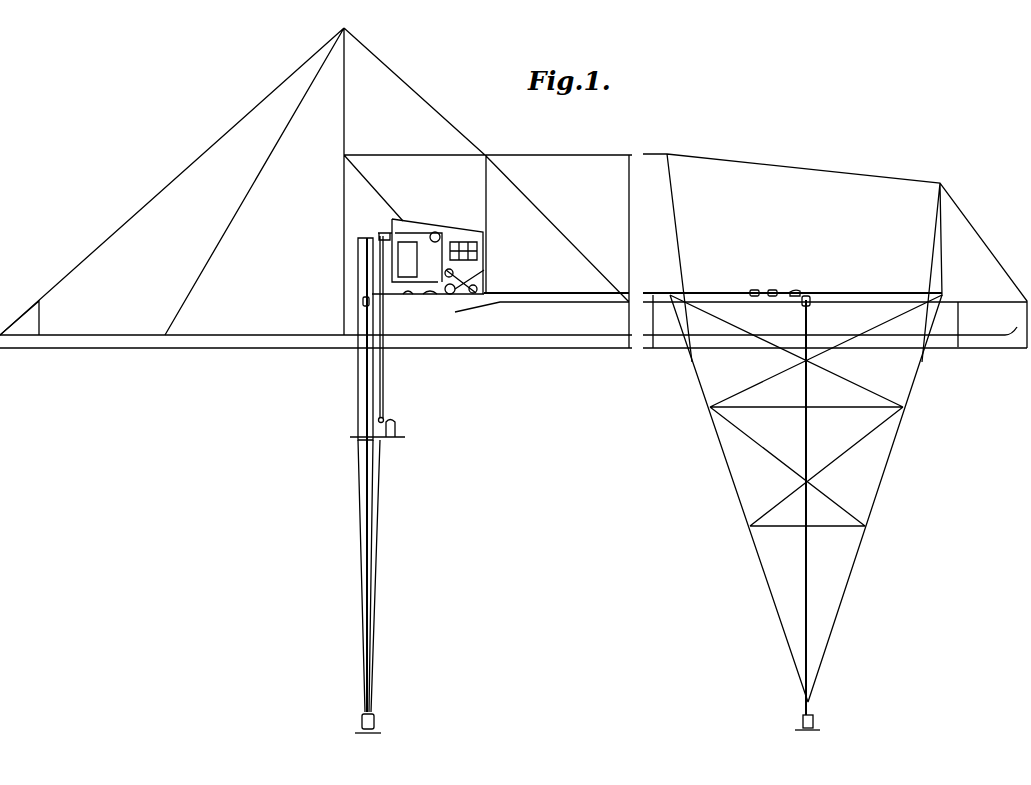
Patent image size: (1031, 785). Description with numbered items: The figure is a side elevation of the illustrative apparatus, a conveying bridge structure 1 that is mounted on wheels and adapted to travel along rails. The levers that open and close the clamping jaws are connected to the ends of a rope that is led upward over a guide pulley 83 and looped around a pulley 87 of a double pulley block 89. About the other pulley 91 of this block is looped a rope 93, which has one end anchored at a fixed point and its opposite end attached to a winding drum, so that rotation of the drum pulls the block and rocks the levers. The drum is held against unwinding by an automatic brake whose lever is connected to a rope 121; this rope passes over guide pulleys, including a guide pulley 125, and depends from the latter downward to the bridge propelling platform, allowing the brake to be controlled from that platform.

The conveying bridge structure 1 is at (568, 342).
The guide pulley 83 is at (362, 300).
The pulley 87 is at (403, 296).
The double pulley block 89 is at (425, 296).
The pulley 91 is at (458, 293).
The rope 93 is at (484, 270).
The rope 121 is at (381, 372).
The guide pulley 125 is at (384, 232).